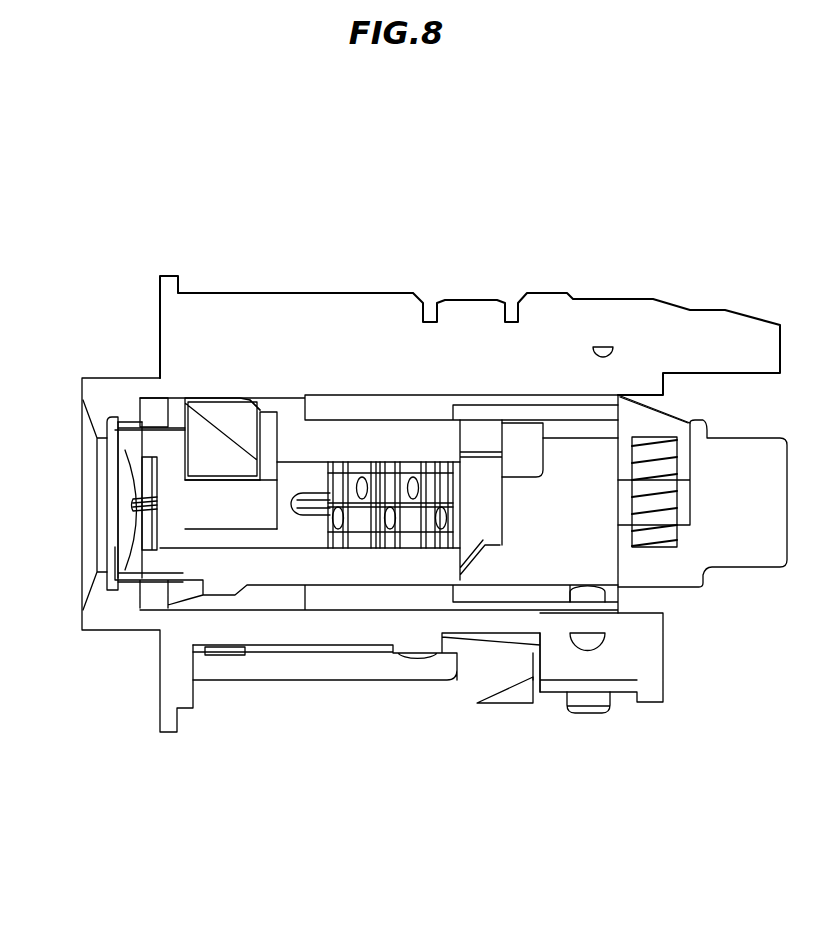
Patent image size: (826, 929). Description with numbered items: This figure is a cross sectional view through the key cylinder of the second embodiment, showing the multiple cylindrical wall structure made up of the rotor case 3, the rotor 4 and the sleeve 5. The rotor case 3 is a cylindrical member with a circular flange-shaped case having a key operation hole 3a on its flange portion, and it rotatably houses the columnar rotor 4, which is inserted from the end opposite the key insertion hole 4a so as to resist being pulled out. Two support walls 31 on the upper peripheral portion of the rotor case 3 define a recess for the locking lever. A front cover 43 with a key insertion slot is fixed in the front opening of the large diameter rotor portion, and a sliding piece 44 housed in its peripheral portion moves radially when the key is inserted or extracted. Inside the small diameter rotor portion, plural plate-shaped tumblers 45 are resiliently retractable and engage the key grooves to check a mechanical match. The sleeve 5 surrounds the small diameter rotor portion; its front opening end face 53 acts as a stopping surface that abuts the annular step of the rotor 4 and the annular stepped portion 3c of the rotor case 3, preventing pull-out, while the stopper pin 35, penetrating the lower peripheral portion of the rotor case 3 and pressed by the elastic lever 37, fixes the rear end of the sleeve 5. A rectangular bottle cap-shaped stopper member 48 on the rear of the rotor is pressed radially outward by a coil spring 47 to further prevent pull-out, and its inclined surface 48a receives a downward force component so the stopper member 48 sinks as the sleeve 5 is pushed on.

The rotor case 3 is at (117, 395).
The key operation hole 3a is at (92, 467).
The annular stepped portion 3c is at (305, 395).
The rotor 4 is at (287, 565).
The key insertion hole 4a is at (150, 520).
The sleeve 5 is at (375, 412).
The support walls 31 is at (298, 330).
The stopper pin 35 is at (592, 700).
The lever 37 is at (348, 653).
The front cover 43 is at (110, 590).
The sliding piece 44 is at (228, 417).
The tumblers 45 is at (420, 440).
The coil spring 47 is at (673, 470).
The stopper member 48 is at (638, 410).
The inclined surface 48a is at (672, 408).
The opening end face 53 is at (303, 408).